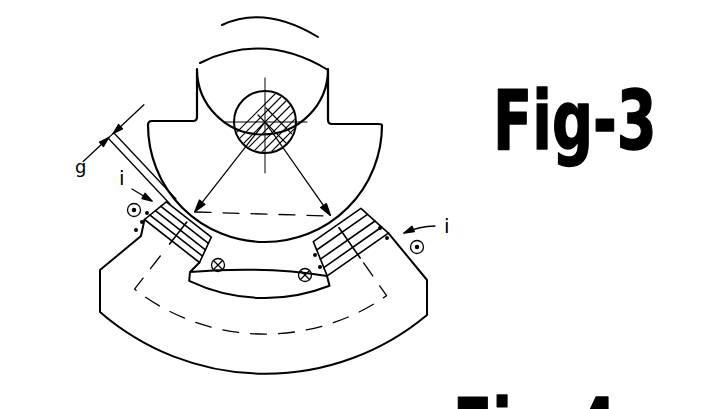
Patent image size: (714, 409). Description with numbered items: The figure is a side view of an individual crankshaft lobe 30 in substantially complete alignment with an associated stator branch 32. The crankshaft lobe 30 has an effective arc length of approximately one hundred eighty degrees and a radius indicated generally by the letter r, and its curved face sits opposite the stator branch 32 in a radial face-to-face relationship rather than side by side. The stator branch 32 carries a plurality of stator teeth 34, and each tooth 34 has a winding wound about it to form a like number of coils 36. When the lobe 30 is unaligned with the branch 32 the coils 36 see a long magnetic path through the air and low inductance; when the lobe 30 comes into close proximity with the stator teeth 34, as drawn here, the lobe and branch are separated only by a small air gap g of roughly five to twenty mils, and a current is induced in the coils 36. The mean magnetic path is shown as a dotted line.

The crankshaft lobe 30 is at (334, 82).
The stator branch 32 is at (154, 348).
The stator tooth 34 is at (110, 274).
The coil 36 is at (141, 235).